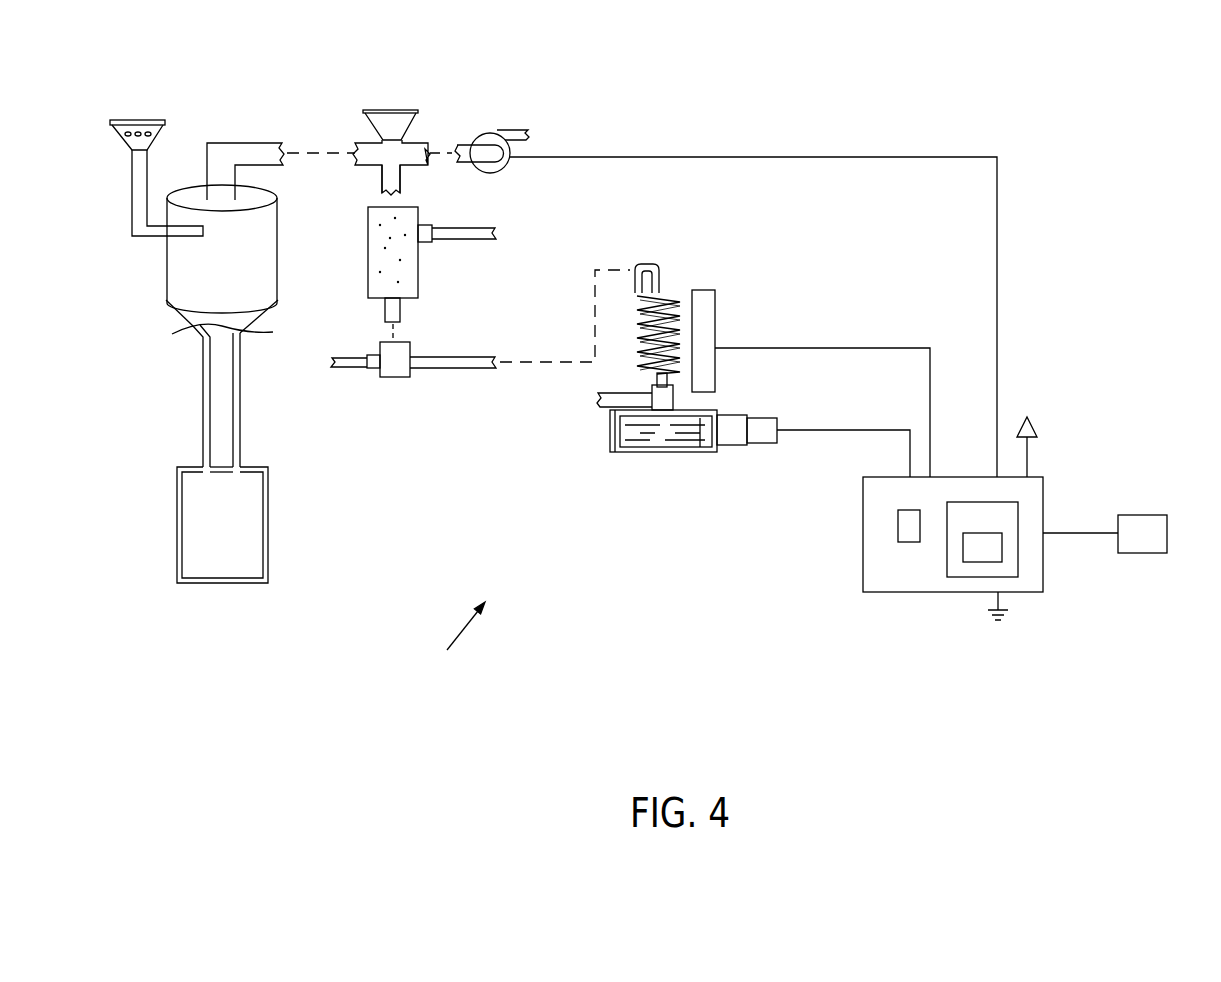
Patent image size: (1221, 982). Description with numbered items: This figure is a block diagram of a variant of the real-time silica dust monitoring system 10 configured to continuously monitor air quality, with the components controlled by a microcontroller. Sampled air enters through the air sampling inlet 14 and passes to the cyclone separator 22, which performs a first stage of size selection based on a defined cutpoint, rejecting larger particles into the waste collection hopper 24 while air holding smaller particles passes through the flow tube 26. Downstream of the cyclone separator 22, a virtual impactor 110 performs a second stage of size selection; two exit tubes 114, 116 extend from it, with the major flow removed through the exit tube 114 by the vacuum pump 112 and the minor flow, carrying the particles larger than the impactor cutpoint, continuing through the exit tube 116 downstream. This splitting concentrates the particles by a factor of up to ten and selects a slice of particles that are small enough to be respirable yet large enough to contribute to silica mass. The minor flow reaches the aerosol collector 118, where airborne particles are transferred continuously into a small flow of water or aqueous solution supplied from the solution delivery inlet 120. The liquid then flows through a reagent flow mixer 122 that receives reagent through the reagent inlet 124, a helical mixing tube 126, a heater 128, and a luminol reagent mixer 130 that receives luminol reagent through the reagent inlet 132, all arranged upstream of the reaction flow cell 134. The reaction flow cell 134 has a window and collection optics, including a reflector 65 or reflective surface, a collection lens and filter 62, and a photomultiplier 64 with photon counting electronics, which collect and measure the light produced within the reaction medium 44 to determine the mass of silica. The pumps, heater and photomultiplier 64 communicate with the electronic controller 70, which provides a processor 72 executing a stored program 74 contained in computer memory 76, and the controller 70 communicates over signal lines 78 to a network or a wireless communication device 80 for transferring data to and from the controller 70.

The real-time silica dust monitoring system 10 is at (454, 646).
The air sampling inlet 14 is at (167, 123).
The cyclone separator 22 is at (263, 222).
The waste collection hopper 24 is at (211, 544).
The flow tube 26 is at (228, 152).
The reaction medium 44 is at (697, 450).
The collection lens and filter 62 is at (725, 452).
The photomultiplier 64 is at (750, 417).
The reflector 65 is at (613, 438).
The electronic controller 70 is at (1043, 582).
The processor 72 is at (898, 527).
The stored program 74 is at (963, 548).
The computer memory 76 is at (1018, 520).
The signal lines 78 is at (1090, 532).
The wireless communication device 80 is at (1167, 535).
The virtual impactor 110 is at (407, 108).
The vacuum pump 112 is at (508, 120).
The exit tube 114 is at (415, 137).
The exit tube 116 is at (403, 180).
The aerosol collector 118 is at (375, 268).
The solution delivery inlet 120 is at (422, 240).
The reagent flow mixer 122 is at (393, 372).
The reagent inlet 124 is at (367, 365).
The helical mixing tube 126 is at (655, 300).
The heater 128 is at (707, 317).
The luminol reagent mixer 130 is at (660, 393).
The reagent inlet 132 is at (640, 397).
The reaction flow cell 134 is at (660, 452).